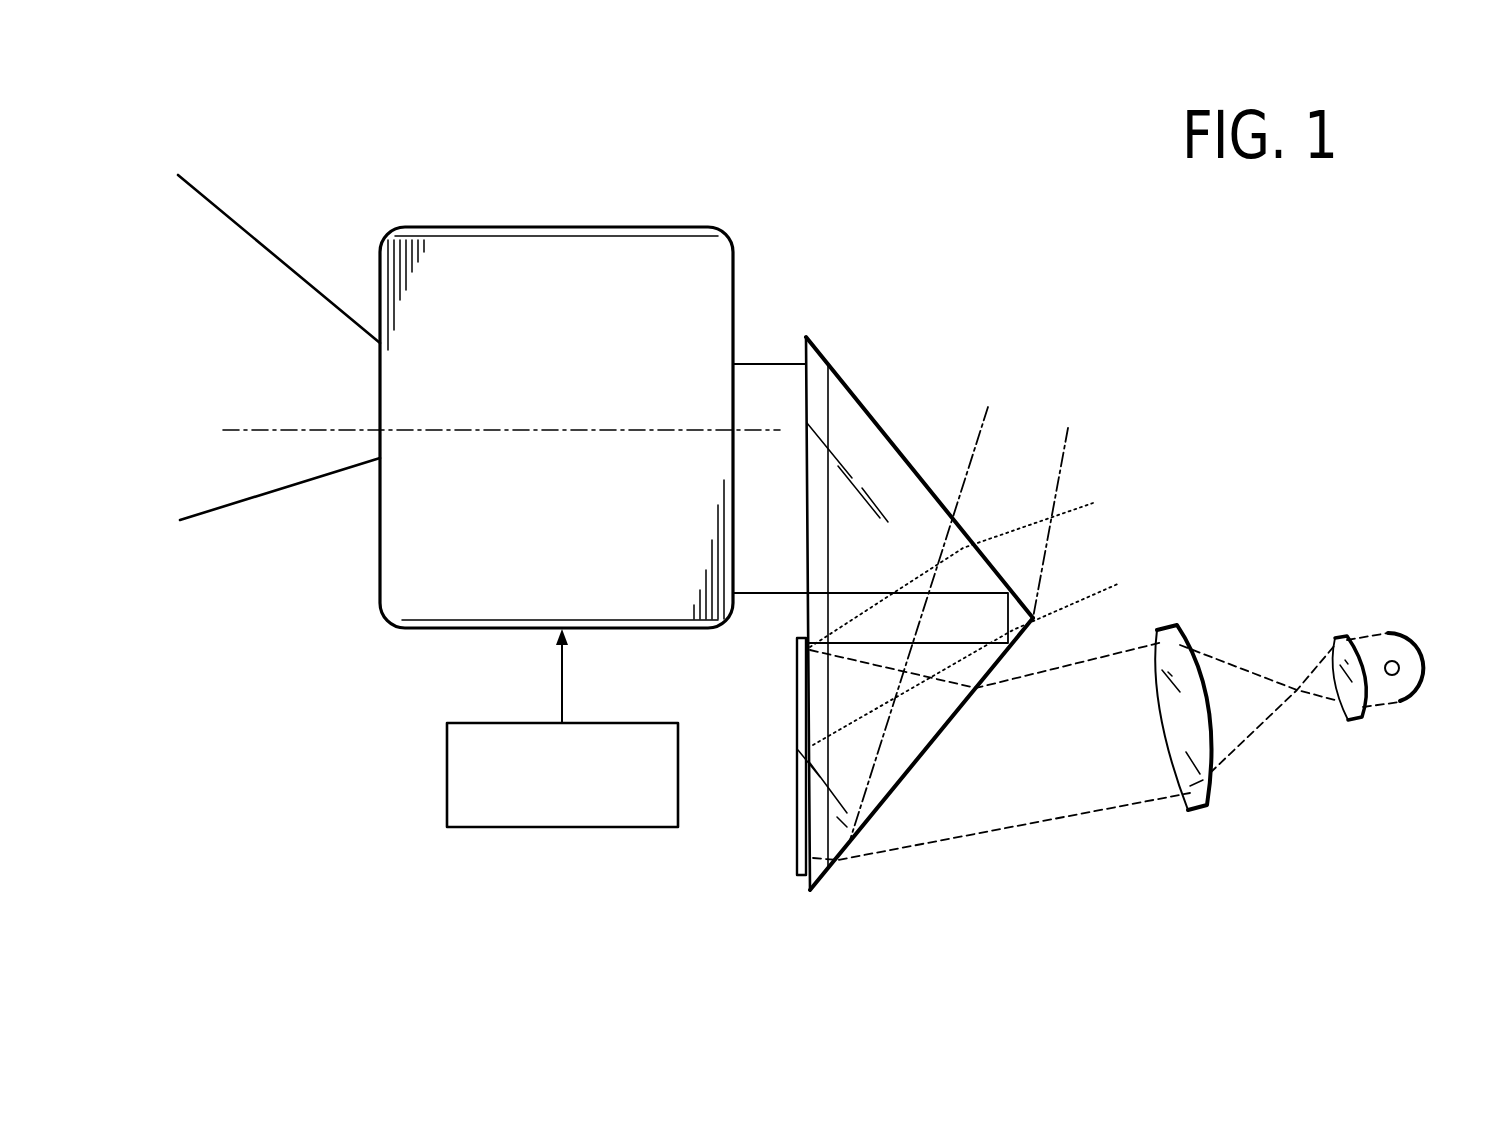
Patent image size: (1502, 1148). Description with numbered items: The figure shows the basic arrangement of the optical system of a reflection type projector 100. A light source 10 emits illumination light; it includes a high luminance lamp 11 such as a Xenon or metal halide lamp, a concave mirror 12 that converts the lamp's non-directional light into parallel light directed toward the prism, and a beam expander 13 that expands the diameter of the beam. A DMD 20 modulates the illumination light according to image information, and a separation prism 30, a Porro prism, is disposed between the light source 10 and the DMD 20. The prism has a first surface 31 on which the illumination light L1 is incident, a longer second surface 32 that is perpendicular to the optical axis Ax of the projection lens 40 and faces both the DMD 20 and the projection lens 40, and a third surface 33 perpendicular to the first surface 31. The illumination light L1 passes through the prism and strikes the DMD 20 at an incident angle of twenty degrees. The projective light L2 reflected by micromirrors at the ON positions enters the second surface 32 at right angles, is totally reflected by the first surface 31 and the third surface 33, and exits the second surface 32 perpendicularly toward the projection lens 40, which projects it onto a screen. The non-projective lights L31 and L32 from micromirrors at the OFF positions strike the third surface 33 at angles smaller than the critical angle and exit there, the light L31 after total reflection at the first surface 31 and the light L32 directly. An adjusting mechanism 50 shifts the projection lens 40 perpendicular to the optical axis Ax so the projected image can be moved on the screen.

The reflection type projector 100 is at (946, 234).
The light source 10 is at (1381, 826).
The high luminance lamp 11 is at (1388, 660).
The concave mirror 12 is at (1423, 681).
The beam expander 13 is at (1377, 723).
The DMD 20 is at (800, 821).
The separation prism 30 is at (860, 383).
The first surface 31 is at (940, 733).
The second surface 32 is at (806, 610).
The third surface 33 is at (915, 470).
The projection lens 40 is at (585, 227).
The adjusting mechanism 50 is at (447, 773).
The optical axis Ax is at (342, 430).
The illumination light L1 is at (1023, 842).
The projective light L2 is at (777, 364).
The non-projective light L31 is at (1076, 424).
The non-projective light L32 is at (1102, 492).